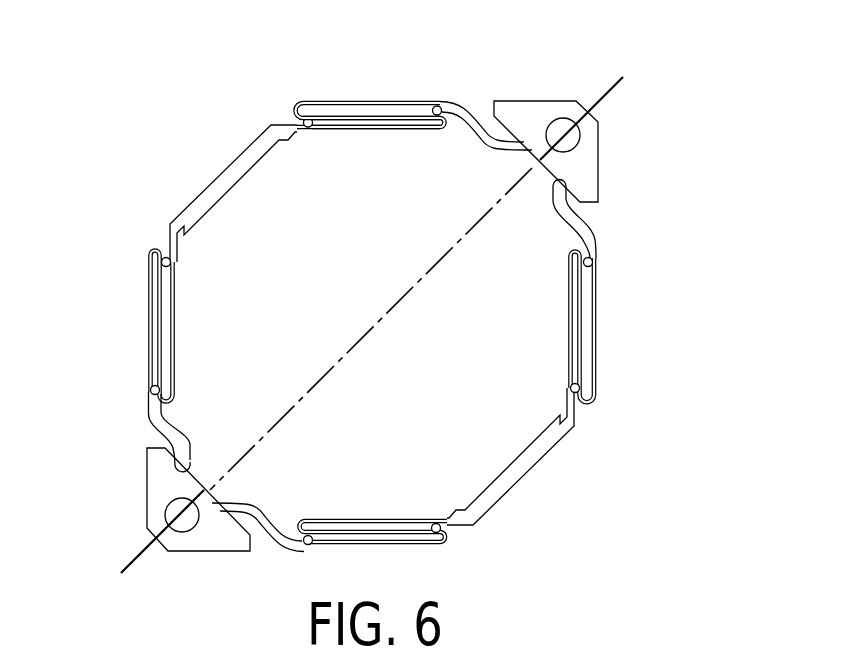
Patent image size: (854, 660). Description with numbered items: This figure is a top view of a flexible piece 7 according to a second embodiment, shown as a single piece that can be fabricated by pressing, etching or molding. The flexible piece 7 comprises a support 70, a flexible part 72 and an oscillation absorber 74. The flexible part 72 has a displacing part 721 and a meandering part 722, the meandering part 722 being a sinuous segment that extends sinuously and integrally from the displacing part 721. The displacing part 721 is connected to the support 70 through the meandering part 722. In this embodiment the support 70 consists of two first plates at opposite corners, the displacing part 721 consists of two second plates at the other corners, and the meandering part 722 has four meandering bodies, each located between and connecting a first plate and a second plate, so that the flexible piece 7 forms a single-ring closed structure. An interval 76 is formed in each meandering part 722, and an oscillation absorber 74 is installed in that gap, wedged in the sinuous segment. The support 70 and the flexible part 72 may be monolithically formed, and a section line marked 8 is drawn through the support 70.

The flexible piece 7 is at (642, 233).
The support 70 is at (596, 158).
The flexible part 72 is at (378, 48).
The displacing part 721 is at (229, 177).
The meandering part 722 is at (362, 100).
The oscillation absorber 74 is at (439, 104).
The interval 76 is at (397, 112).
The section line 8- 8 is at (620, 96).